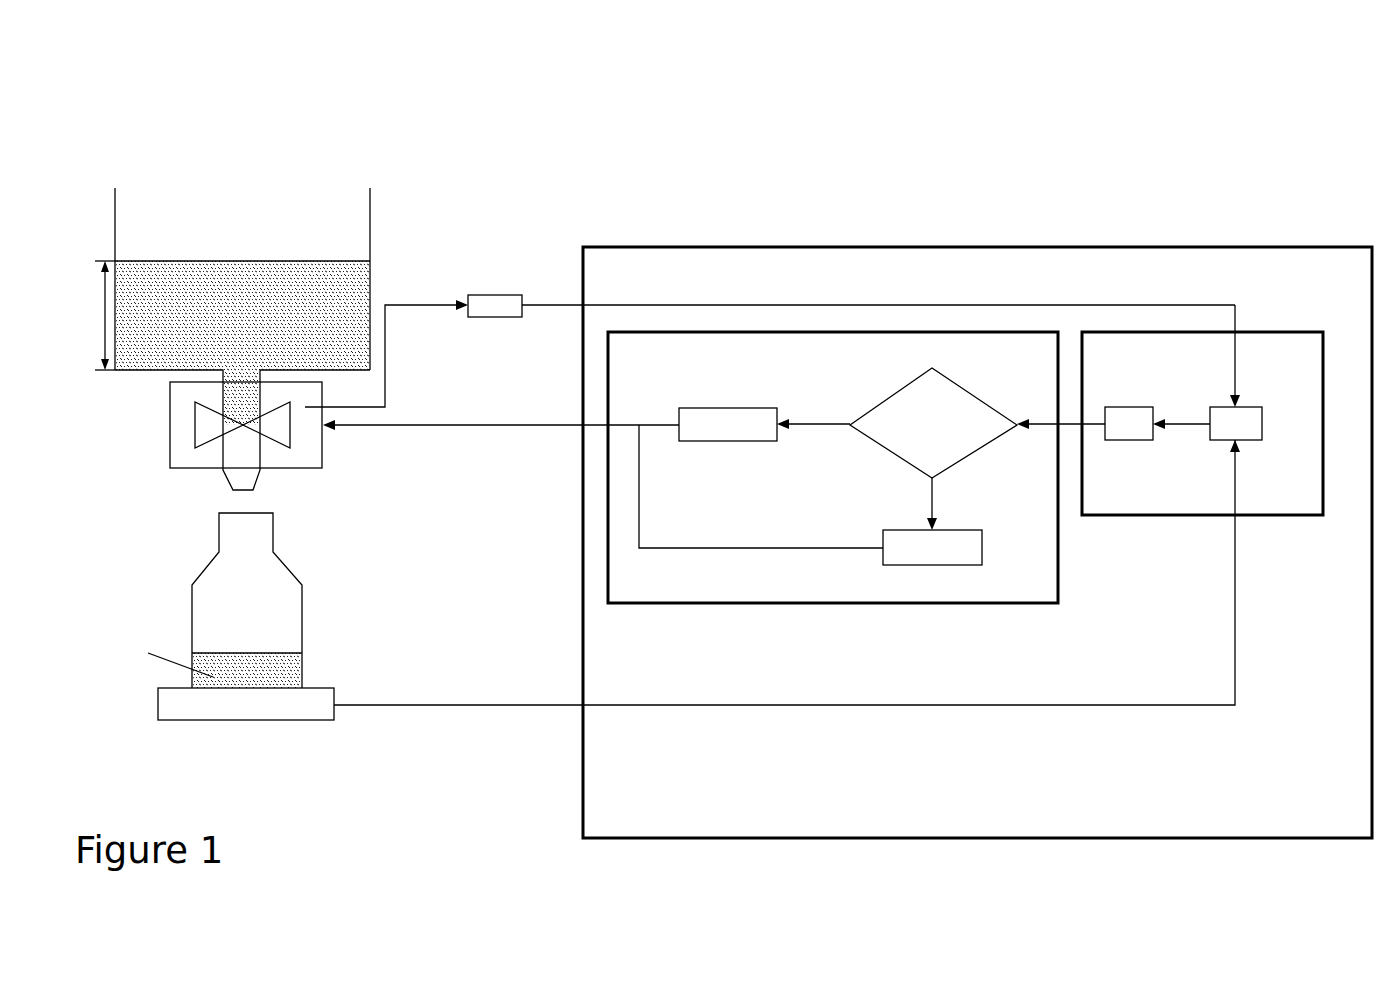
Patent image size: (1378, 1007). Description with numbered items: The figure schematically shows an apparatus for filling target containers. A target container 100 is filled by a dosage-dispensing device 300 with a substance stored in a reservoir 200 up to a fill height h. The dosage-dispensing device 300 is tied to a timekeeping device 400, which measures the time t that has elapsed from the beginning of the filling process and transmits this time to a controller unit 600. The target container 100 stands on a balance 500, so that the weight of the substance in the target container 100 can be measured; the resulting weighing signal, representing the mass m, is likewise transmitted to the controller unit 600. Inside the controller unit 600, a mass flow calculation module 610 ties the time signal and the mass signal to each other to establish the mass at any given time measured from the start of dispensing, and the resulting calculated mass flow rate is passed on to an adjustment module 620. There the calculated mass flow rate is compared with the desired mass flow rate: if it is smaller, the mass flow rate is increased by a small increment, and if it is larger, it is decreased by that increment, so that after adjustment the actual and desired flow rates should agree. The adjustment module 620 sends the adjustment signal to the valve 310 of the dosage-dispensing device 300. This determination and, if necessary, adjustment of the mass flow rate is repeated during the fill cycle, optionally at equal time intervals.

The target container 100 is at (203, 580).
The reservoir 200 is at (367, 283).
The dosage-dispensing device 300 is at (192, 468).
The valve 310 is at (193, 425).
The timekeeping device 400 is at (495, 293).
The balance 500 is at (247, 722).
The controller unit 600 is at (621, 283).
The mass flow calculation module 610 is at (1113, 378).
The adjustment module 620 is at (636, 373).